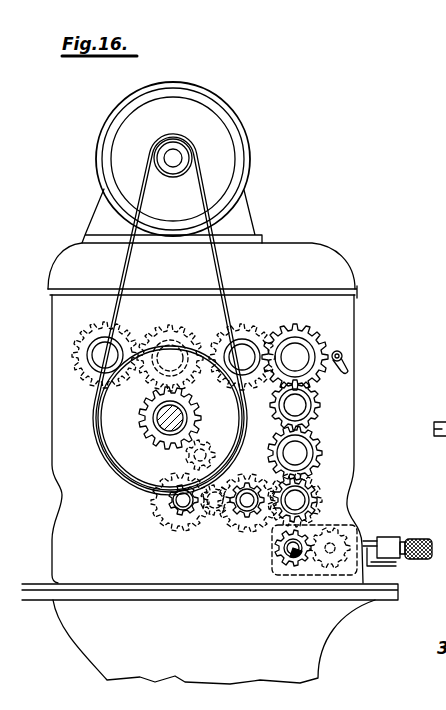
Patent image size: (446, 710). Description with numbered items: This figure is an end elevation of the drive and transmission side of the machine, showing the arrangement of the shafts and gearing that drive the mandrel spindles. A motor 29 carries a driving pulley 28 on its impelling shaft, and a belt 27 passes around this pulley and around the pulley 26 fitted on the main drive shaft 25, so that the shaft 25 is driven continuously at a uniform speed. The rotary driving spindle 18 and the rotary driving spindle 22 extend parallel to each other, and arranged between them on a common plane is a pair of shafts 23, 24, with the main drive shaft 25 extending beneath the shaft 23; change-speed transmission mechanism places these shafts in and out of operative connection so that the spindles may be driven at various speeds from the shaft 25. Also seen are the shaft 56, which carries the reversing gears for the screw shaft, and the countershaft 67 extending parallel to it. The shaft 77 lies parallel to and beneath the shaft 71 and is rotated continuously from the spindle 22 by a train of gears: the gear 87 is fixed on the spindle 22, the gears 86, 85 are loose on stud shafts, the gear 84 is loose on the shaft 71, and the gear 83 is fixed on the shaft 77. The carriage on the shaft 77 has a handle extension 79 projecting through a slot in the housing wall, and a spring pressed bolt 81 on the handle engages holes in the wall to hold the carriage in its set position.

The rotary driving spindle 18 is at (101, 349).
The rotary driving spindle 22 is at (299, 350).
The shaft 23 is at (164, 348).
The shaft 24 is at (243, 347).
The main drive shaft 25 is at (151, 418).
The pulley 26 is at (98, 406).
The belt 27 is at (121, 272).
The driving pulley 28 is at (156, 148).
The motor 29 is at (122, 103).
The shaft 56 is at (176, 505).
The countershaft 67 is at (247, 492).
The shaft 71 is at (298, 501).
The shaft 77 is at (285, 549).
The handle extension 79 is at (394, 571).
The spring pressed bolt 81 is at (372, 542).
The gear 83 is at (275, 566).
The gear 84 is at (305, 497).
The gear 85 is at (310, 453).
The gear 86 is at (311, 405).
The gear 87 is at (340, 355).